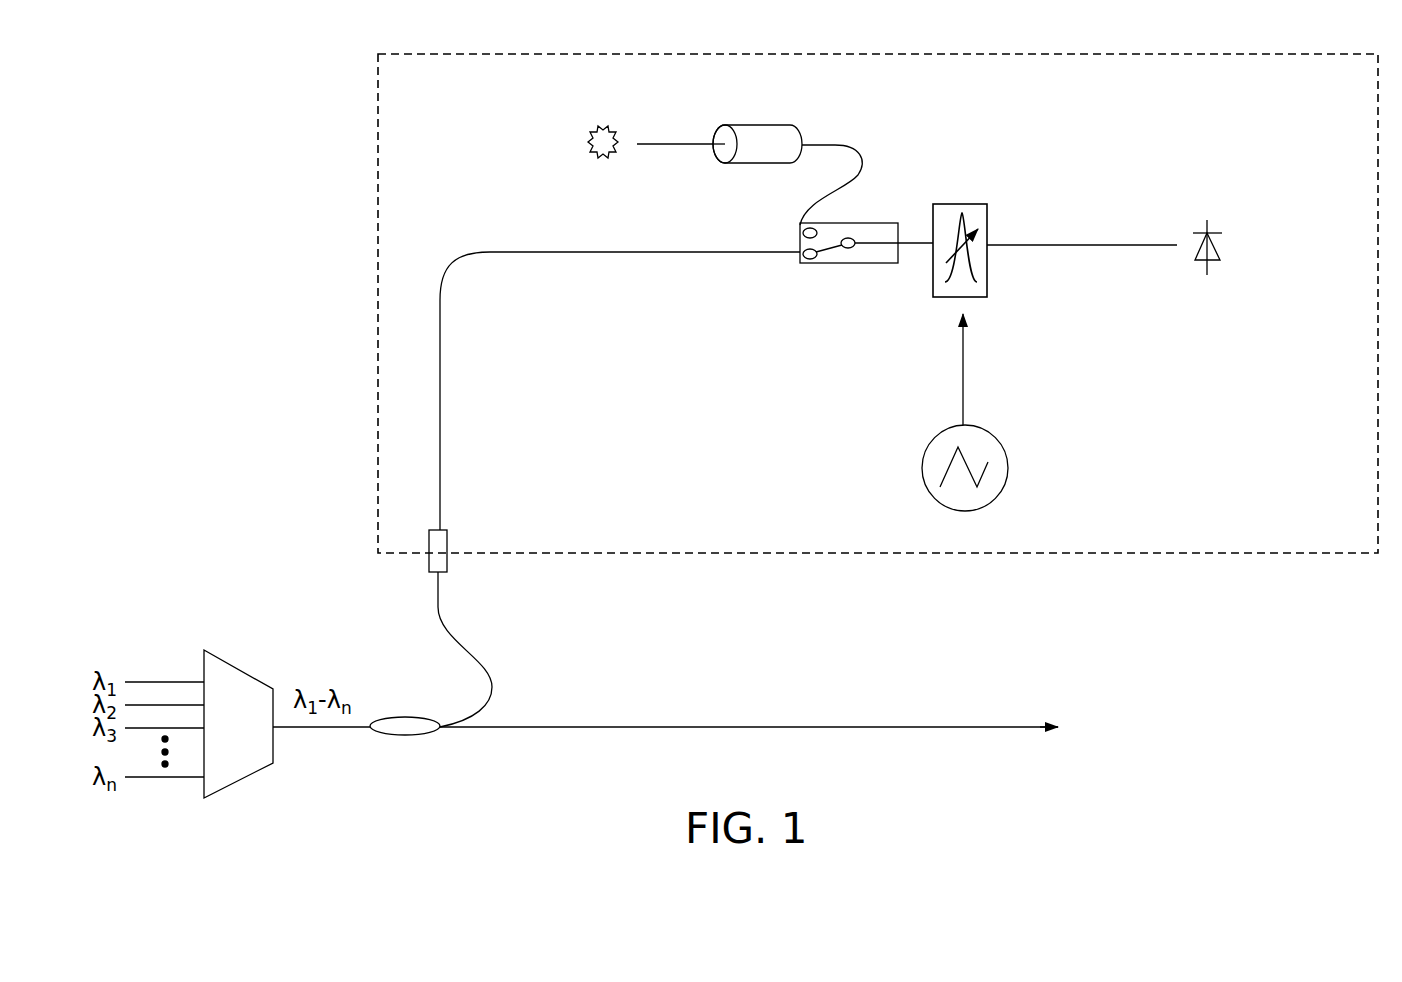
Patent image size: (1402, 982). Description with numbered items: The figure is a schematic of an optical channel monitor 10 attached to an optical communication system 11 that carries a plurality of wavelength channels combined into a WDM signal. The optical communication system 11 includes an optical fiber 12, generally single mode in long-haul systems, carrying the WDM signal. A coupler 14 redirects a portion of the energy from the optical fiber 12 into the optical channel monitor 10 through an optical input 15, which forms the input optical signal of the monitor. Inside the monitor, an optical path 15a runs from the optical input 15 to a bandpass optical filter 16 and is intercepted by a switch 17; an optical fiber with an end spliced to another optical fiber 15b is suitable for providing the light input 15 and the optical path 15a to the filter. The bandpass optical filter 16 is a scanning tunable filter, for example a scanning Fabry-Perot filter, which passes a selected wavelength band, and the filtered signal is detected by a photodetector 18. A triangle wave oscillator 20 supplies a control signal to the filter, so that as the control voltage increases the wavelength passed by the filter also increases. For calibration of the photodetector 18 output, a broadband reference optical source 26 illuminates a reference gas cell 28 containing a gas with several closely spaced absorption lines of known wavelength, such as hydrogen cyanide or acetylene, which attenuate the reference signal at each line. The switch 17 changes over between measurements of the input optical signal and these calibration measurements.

The optical channel monitor 10 is at (368, 257).
The optical communication system 11 is at (755, 698).
The optical fiber 12 is at (693, 726).
The coupler 14 is at (405, 717).
The optical input 15 is at (447, 541).
The optical path 15a is at (440, 353).
The optical fiber 15b is at (492, 688).
The bandpass optical filter 16 is at (987, 229).
The switch 17 is at (870, 223).
The photodetector 18 is at (1222, 251).
The triangle wave oscillator 20 is at (1008, 469).
The reference optical source 26 is at (600, 129).
The reference gas cell 28 is at (762, 128).